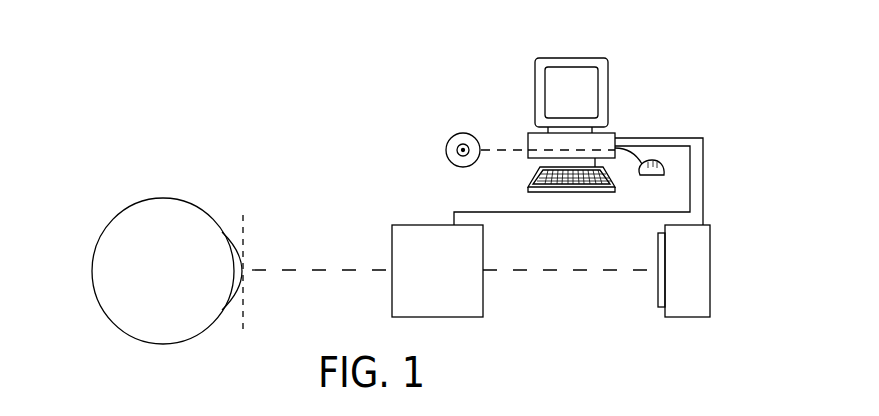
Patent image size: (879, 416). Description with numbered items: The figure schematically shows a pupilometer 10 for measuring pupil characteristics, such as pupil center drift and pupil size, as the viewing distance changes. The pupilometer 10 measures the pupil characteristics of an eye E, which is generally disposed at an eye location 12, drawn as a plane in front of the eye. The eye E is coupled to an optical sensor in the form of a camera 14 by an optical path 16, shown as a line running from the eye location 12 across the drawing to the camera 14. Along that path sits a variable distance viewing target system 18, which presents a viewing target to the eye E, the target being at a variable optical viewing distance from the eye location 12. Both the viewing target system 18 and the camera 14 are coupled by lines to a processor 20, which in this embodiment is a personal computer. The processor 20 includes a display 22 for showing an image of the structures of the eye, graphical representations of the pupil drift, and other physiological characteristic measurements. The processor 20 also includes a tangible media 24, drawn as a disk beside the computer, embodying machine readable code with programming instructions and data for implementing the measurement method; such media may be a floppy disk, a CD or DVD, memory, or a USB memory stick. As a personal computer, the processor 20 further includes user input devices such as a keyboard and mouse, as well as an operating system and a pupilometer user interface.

The pupilometer 10 is at (248, 50).
The eye E is at (110, 199).
The eye location 12 is at (254, 246).
The camera 14 is at (689, 318).
The optical path 16 is at (554, 273).
The variable distance viewing target system 18 is at (415, 224).
The processor 20 is at (497, 98).
The display 22 is at (610, 80).
The tangible media 24 is at (446, 140).